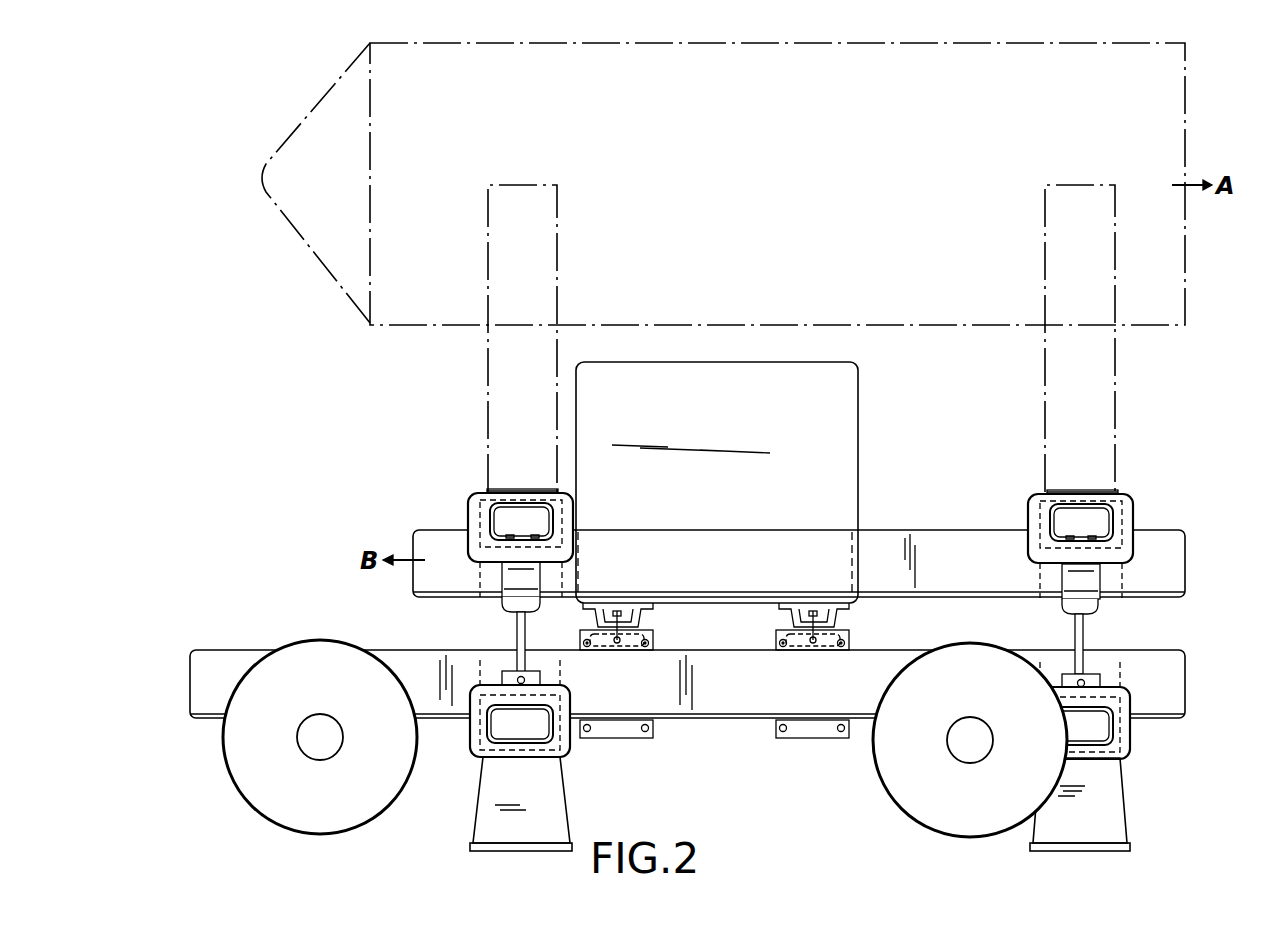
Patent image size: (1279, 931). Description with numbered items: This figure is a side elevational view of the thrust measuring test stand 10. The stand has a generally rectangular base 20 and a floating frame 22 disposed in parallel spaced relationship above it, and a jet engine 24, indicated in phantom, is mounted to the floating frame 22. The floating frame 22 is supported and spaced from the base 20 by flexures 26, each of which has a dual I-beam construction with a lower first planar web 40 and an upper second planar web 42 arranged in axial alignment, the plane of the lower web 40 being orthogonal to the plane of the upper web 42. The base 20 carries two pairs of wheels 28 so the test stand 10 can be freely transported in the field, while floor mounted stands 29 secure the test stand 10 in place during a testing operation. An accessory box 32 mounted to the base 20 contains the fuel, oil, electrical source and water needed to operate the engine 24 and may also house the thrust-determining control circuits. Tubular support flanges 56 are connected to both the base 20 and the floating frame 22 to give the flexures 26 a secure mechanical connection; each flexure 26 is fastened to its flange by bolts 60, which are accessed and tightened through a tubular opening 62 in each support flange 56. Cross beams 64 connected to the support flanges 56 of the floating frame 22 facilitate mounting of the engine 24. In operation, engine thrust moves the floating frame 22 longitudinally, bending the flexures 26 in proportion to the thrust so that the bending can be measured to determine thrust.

The thrust measuring test stand 10 is at (1204, 527).
The base 20 is at (1199, 660).
The floating frame 22 is at (1196, 583).
The jet engine 24 is at (1186, 251).
The flexure 26 is at (517, 630).
The wheels 28 is at (241, 783).
The floor mounted stands 29 is at (495, 815).
The accessory box 32 is at (690, 380).
The first planar web 40 is at (508, 617).
The second planar web 42 is at (510, 577).
The tubular support flange 56 is at (478, 497).
The bolts 60 is at (535, 533).
The tubular opening 62 is at (500, 512).
The cross beams 64 is at (497, 491).